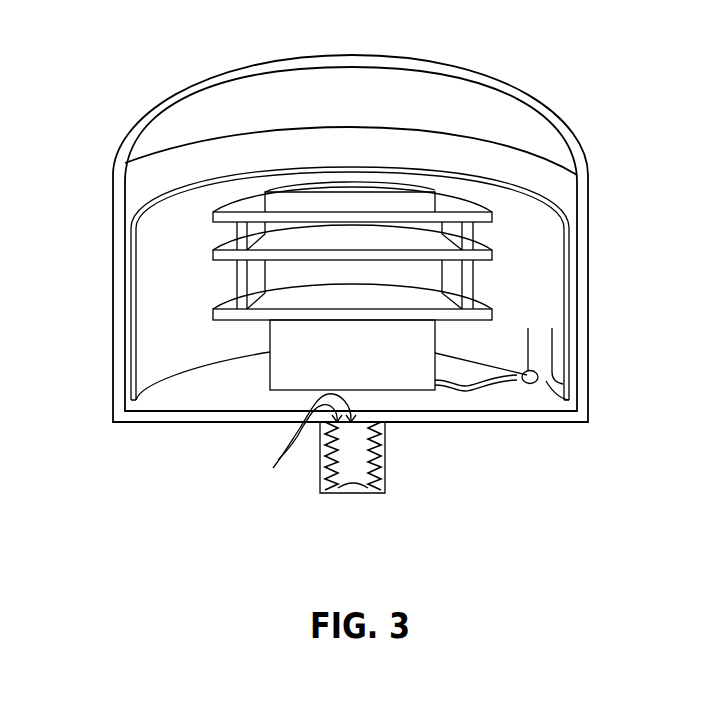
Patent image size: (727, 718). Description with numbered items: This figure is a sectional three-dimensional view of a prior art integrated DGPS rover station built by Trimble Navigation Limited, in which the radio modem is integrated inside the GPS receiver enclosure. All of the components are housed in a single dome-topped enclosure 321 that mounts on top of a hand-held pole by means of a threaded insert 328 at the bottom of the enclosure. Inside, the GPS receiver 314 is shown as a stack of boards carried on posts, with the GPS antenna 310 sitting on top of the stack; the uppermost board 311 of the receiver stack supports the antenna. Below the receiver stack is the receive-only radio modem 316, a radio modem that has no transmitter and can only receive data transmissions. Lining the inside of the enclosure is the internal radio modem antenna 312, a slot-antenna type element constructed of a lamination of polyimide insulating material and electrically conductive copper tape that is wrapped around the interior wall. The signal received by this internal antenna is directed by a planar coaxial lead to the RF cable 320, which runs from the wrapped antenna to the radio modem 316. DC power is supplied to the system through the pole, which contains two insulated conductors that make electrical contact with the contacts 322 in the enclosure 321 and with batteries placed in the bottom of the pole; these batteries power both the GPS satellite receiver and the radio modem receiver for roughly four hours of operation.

The GPS antenna 310 is at (362, 182).
The top circuit board 311 is at (446, 200).
The internal radio modem antenna 312 is at (542, 262).
The GPS receiver 314 is at (276, 178).
The receive-only radio modem 316 is at (283, 360).
The RF cable 320 is at (492, 387).
The enclosure 321 is at (230, 74).
The contacts 322 is at (292, 438).
The threaded insert 328 is at (383, 474).